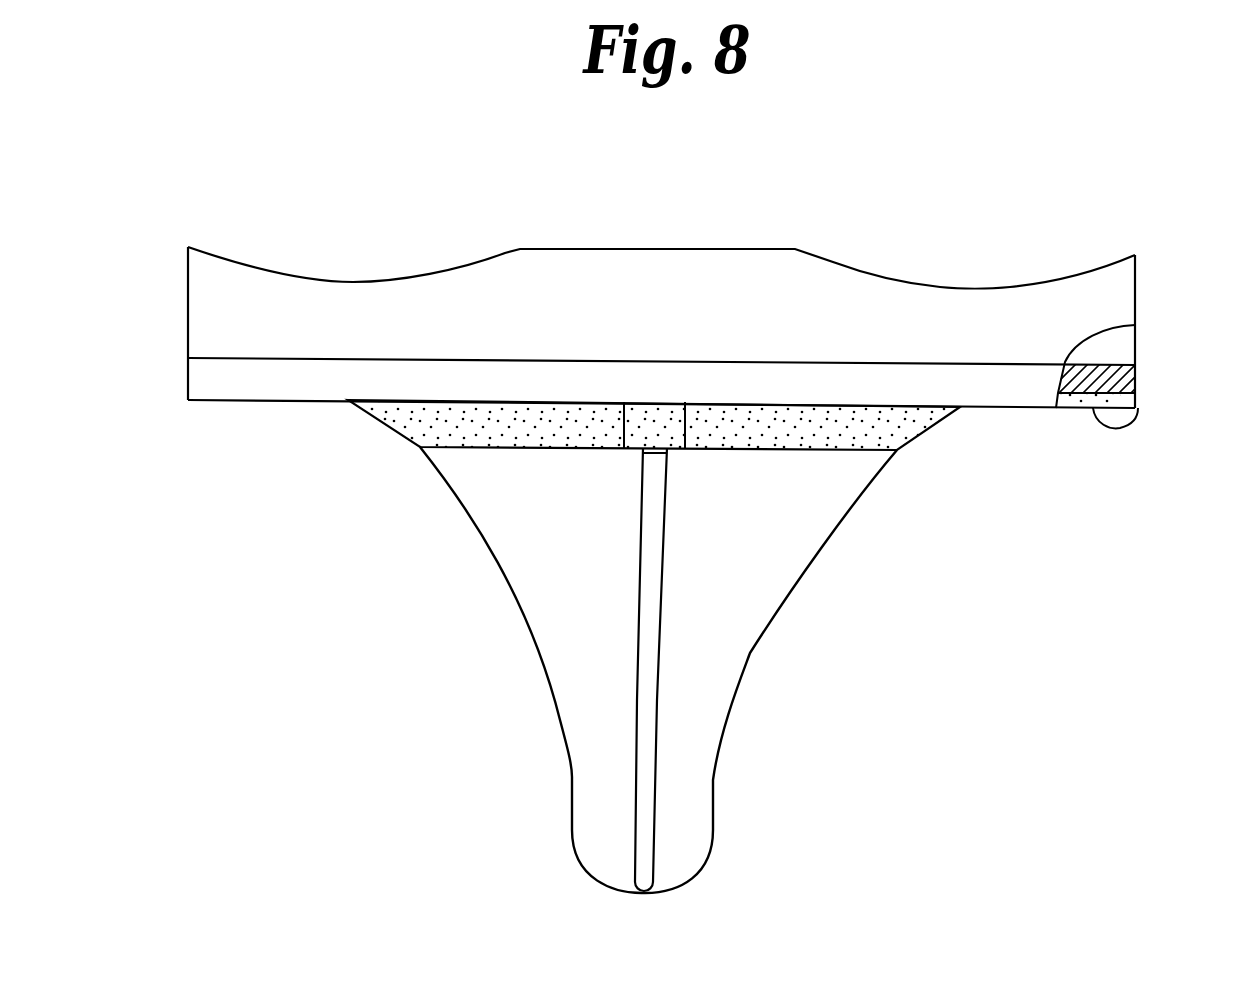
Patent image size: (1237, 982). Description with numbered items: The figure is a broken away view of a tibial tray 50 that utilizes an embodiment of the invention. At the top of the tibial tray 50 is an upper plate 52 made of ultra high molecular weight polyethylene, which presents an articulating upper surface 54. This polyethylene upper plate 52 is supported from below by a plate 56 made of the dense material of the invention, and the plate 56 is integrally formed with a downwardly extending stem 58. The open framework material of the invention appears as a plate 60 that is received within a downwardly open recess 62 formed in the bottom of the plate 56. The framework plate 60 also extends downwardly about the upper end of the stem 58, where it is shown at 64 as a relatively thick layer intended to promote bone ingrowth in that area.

The tibial tray 50 is at (880, 562).
The upper plate 52 is at (663, 280).
The articulating upper surface 54 is at (882, 278).
The plate 56 is at (304, 385).
The stem 58 is at (570, 778).
The plate of open framework material 60 is at (1072, 409).
The downwardly open recess 62 is at (1146, 410).
The relatively thick layer of framework 64 is at (403, 435).